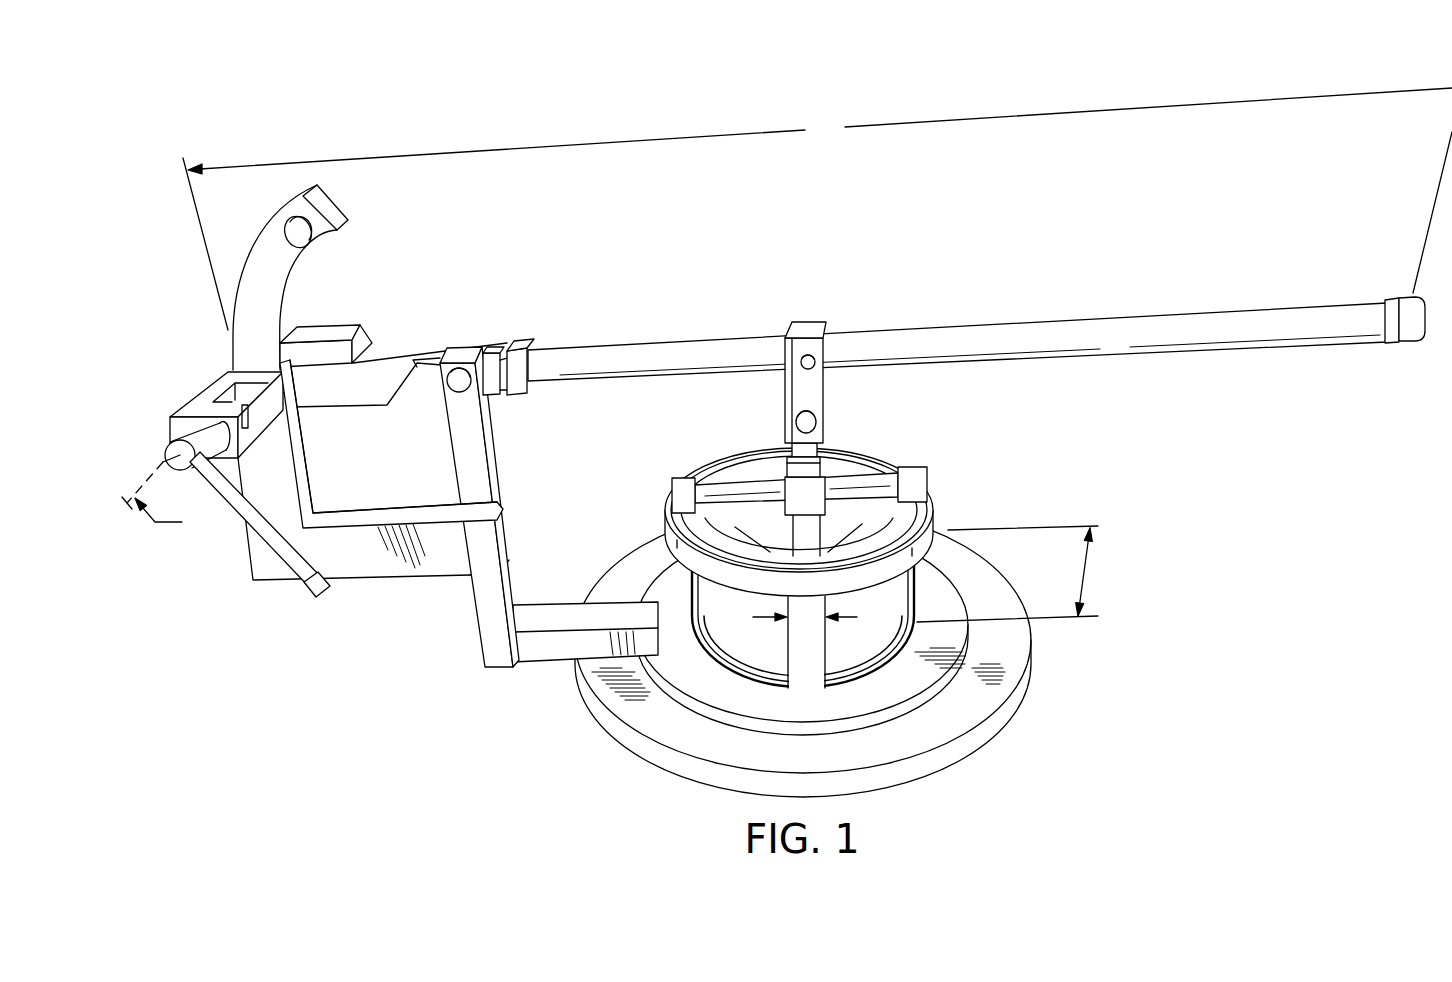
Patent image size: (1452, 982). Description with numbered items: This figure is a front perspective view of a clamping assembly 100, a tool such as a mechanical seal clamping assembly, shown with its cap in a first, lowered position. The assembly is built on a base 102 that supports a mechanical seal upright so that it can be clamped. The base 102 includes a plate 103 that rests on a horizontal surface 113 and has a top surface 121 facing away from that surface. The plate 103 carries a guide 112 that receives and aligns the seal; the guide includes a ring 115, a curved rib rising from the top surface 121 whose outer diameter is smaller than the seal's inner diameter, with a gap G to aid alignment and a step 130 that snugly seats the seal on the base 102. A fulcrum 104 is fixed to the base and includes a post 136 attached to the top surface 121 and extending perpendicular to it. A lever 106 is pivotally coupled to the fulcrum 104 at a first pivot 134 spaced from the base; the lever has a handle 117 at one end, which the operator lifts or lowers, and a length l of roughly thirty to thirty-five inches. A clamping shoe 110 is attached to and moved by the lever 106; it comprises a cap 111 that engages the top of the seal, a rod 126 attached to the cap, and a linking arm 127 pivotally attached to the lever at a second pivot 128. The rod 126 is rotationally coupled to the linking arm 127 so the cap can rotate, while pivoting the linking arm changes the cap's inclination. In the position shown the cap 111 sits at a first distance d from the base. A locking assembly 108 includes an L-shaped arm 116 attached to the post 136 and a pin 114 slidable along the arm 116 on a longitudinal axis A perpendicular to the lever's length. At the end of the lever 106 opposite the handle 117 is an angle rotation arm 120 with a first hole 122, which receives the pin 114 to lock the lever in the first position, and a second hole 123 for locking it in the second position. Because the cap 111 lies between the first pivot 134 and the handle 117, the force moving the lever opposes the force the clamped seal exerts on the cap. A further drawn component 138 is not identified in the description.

The clamping assembly 100 is at (930, 233).
The base 102 is at (938, 699).
The plate 103 is at (882, 720).
The fulcrum 104 is at (472, 618).
The lever 106 is at (1030, 321).
The locking assembly 108 is at (186, 308).
The clamping shoe 110 is at (950, 456).
The cap 111 is at (932, 525).
The guide 112 is at (815, 662).
The horizontal surface 113 is at (421, 729).
The pin 114 is at (163, 450).
The ring 115 is at (735, 647).
The arm 116 is at (333, 513).
The handle 117 is at (1310, 306).
The angle rotation arm 120 is at (316, 277).
The top surface 121 is at (598, 602).
The first hole 122 is at (260, 365).
The second hole 123 is at (298, 247).
The rod 126 is at (846, 470).
The linking arm 127 is at (768, 370).
The second pivot 128 is at (806, 353).
The step 130 is at (693, 587).
The first pivot 134 is at (468, 393).
The post 136 is at (469, 507).
The strut 138 is at (307, 585).